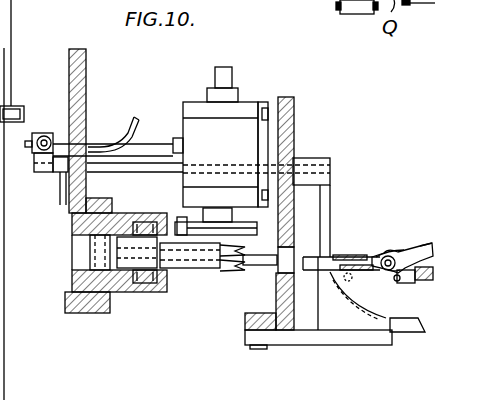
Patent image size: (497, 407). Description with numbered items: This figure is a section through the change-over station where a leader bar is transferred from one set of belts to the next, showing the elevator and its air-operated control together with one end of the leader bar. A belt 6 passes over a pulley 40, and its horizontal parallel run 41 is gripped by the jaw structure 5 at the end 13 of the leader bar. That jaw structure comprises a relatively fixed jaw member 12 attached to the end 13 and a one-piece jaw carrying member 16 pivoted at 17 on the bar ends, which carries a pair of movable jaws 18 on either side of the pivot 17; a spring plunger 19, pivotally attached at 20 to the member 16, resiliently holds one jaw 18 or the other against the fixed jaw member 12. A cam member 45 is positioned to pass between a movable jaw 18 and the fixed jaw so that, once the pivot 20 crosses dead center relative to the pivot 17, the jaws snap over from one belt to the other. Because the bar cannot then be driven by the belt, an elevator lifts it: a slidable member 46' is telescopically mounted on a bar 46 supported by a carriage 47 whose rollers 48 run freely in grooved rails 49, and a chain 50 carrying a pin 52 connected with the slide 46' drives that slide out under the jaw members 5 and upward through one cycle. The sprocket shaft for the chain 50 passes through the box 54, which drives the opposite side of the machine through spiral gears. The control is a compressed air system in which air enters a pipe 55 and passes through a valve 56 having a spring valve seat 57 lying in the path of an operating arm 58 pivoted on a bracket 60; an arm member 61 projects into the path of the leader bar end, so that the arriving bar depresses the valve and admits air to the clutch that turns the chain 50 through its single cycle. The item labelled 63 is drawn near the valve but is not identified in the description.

The lever arm 5 is at (391, 277).
The frame 6 is at (6, 48).
The lever 12 is at (372, 257).
The lever portion 13 is at (403, 250).
The lever tip 16 is at (425, 248).
The pivot pin 17 is at (390, 256).
The frame wall 18 is at (333, 278).
The pad 19 is at (417, 278).
The clamp jaw 20 is at (395, 284).
The switch 40 is at (318, 0).
The rack 41 is at (350, 256).
The plate 45 is at (402, 332).
The rod 46 is at (260, 277).
The fork 46' is at (229, 290).
The housing 47 is at (127, 263).
The shaft 48 is at (148, 285).
The bearing 49 is at (125, 220).
The bracket 50 is at (190, 217).
The shaft 52 is at (185, 255).
The motor body 54 is at (233, 130).
The bolt 55 is at (26, 147).
The rod 56 is at (53, 136).
The clamp block 57 is at (36, 133).
The lower block 58 is at (38, 172).
The post 60 is at (55, 180).
The column 61 is at (330, 193).
The hose 63 is at (140, 114).